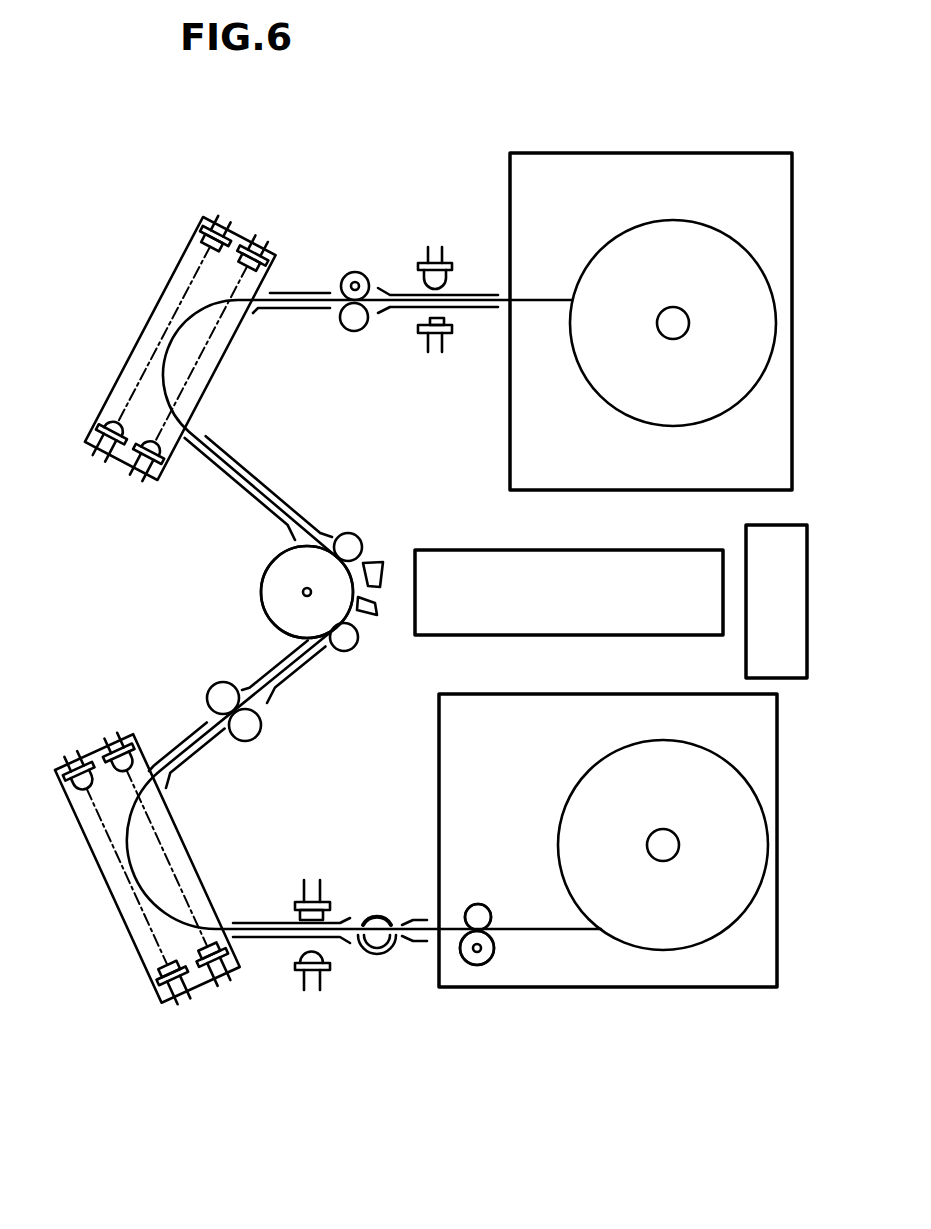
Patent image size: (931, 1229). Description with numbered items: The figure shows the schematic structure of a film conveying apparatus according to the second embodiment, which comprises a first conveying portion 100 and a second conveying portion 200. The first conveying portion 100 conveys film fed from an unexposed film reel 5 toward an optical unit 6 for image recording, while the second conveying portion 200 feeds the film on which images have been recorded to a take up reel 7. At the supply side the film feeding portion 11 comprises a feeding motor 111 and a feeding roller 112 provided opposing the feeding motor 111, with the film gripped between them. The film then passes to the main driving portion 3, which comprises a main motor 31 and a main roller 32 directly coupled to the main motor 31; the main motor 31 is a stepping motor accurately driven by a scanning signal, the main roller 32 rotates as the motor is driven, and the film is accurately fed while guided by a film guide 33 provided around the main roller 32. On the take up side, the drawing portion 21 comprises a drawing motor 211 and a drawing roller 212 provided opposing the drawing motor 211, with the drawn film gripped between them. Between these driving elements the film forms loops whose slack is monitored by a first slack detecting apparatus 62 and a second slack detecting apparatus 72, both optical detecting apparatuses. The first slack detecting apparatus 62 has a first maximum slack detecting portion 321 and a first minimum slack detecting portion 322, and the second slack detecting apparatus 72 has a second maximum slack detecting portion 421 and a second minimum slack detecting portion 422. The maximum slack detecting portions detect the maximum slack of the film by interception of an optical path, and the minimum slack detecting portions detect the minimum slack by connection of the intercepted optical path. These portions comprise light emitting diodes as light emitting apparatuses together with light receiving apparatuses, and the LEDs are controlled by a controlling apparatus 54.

The second conveying portion 200 is at (315, 215).
The second slack detecting apparatus 72 is at (127, 283).
The second maximum slack detecting portion 421 is at (197, 257).
The second minimum slack detecting portion 422 is at (232, 277).
The drawing portion 21 is at (292, 318).
The drawing roller 212 is at (360, 273).
The drawing motor 211 is at (355, 331).
The take up reel 7 is at (750, 352).
The main driving portion 3 is at (245, 595).
The main motor 31 is at (305, 590).
The main roller 32 is at (285, 612).
The film guide 33 is at (370, 565).
The first conveying portion 100 is at (255, 1008).
The first slack detecting apparatus 62 is at (105, 910).
The first maximum slack detecting portion 321 is at (170, 957).
The first minimum slack detecting portion 322 is at (200, 950).
The optical unit 6 is at (460, 623).
The controlling apparatus 54 is at (770, 625).
The unexposed film reel 5 is at (742, 848).
The film feeding portion 11 is at (455, 958).
The feeding motor 111 is at (470, 906).
The feeding roller 112 is at (474, 962).